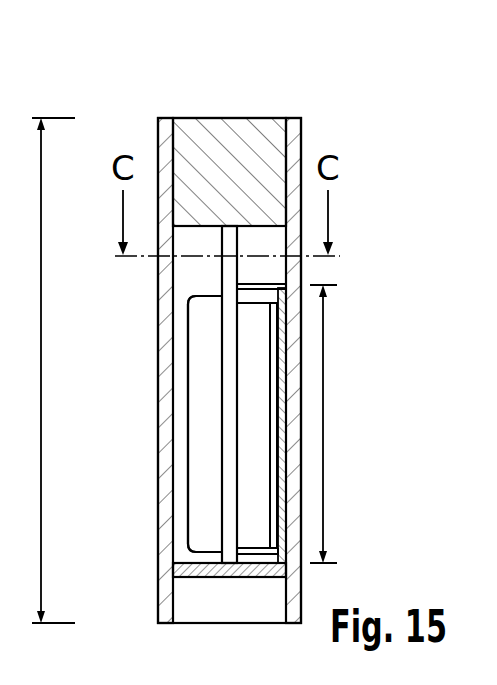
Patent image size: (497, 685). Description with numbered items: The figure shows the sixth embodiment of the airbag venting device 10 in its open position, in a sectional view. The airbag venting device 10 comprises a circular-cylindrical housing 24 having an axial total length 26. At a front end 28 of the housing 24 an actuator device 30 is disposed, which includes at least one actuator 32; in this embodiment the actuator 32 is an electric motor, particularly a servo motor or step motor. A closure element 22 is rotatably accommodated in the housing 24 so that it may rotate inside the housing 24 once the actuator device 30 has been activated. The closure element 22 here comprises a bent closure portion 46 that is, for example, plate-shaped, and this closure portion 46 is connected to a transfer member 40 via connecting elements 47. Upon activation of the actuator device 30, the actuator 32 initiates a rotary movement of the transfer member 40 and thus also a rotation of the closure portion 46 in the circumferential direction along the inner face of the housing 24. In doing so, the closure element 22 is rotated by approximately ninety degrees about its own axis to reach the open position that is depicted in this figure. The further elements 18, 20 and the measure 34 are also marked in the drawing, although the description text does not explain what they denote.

The airbag venting device 10 is at (137, 106).
The front end 28 is at (186, 104).
The actuator device 30 is at (276, 104).
The actuator 32 is at (222, 142).
The transfer member 40 is at (228, 268).
The connecting elements 47 is at (260, 294).
The closure portion 46 is at (275, 350).
The closure element 22 is at (287, 420).
The U-shaped element 18 is at (188, 527).
The U-shaped element 20 is at (205, 424).
The housing 24 is at (165, 430).
The axial total length 26 is at (42, 573).
The measuring length 34 is at (322, 437).